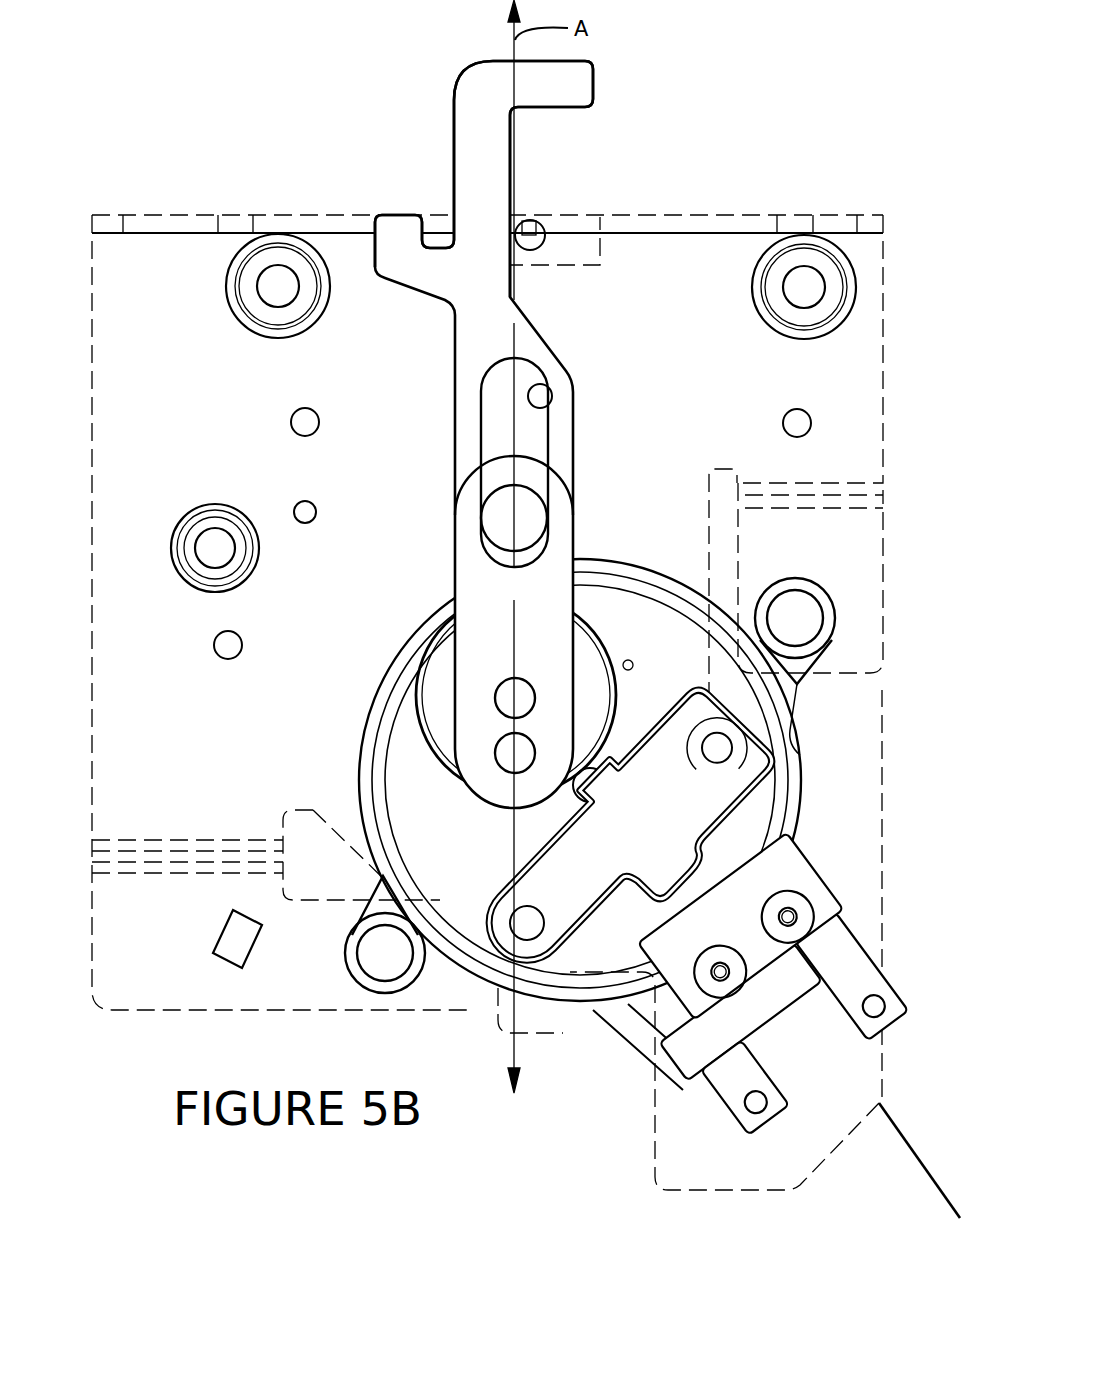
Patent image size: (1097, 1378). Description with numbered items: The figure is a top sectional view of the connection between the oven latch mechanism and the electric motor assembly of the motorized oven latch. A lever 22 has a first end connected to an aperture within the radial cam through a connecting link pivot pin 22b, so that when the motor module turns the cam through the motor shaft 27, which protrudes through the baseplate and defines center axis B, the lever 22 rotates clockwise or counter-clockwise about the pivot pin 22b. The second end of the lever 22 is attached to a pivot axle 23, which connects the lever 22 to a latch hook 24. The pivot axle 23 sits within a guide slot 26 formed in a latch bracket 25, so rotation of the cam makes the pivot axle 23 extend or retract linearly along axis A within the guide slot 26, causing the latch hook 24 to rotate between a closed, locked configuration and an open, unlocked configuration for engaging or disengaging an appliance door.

The lever 22 is at (503, 647).
The connecting link pivot pin 22b is at (512, 760).
The pivot axle 23 is at (498, 515).
The latch hook 24 is at (464, 178).
The latch bracket 25 is at (685, 285).
The guide slot 26 is at (549, 448).
The motor shaft 27 is at (518, 695).